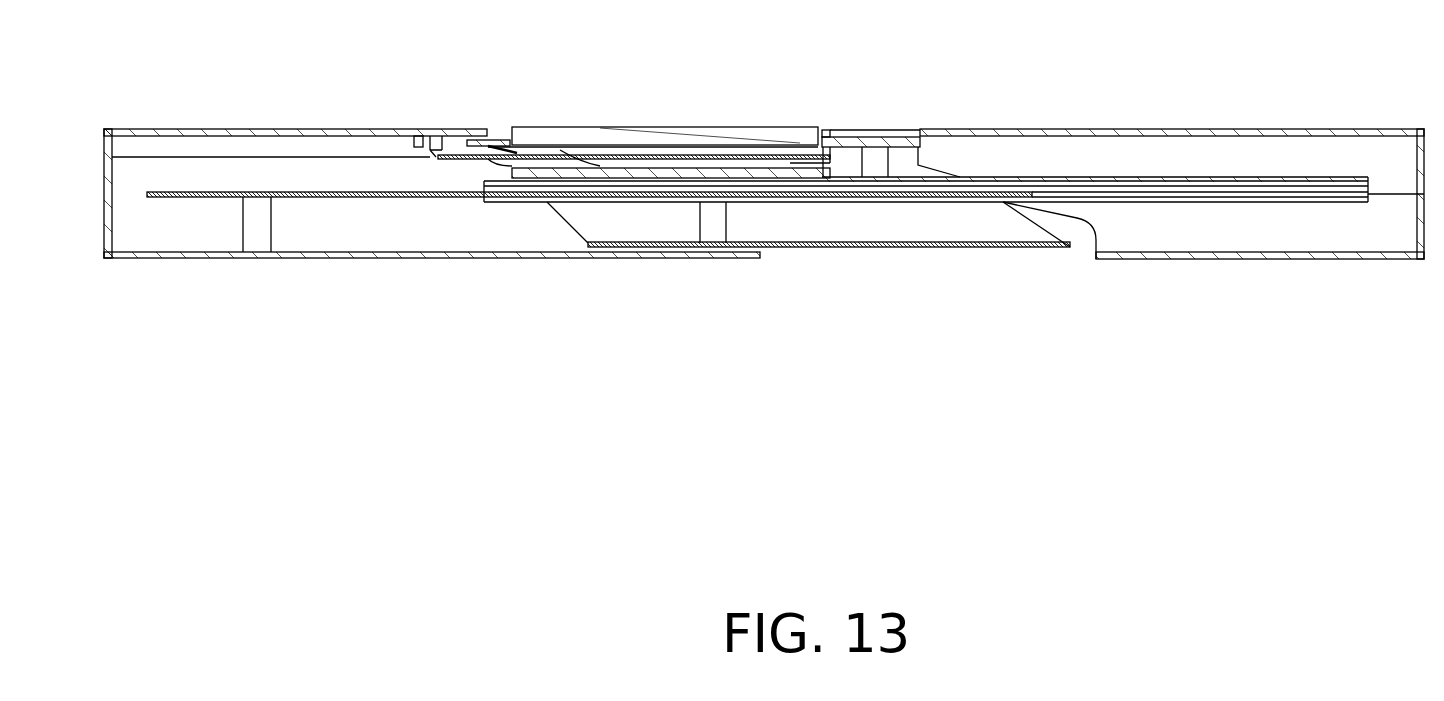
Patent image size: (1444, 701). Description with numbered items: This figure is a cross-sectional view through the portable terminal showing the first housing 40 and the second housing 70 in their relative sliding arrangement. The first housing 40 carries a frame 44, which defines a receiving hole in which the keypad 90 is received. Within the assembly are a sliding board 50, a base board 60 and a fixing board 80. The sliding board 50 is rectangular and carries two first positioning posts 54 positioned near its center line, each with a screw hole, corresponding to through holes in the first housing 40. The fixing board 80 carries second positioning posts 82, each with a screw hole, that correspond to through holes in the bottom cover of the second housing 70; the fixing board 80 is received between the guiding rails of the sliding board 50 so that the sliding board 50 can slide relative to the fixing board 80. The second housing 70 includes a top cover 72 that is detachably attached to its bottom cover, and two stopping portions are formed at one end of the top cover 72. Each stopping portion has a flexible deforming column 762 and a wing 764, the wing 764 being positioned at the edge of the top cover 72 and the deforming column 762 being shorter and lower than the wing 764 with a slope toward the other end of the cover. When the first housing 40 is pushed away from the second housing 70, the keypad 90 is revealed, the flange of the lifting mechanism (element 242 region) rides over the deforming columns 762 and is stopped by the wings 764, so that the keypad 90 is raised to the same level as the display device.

The first housing 40 is at (1135, 130).
The frame 44 is at (886, 142).
The sliding board 50 is at (495, 182).
The first positioning posts 54 is at (872, 150).
The base board 60 is at (555, 173).
The second housing 70 is at (106, 212).
The top cover 72 is at (268, 133).
The fixing board 80 is at (226, 214).
The second positioning posts 82 is at (262, 232).
The keypad 90 is at (585, 135).
The elastic sheet 242 is at (427, 153).
The flexible deforming column 762 is at (417, 136).
The wing 764 is at (438, 135).